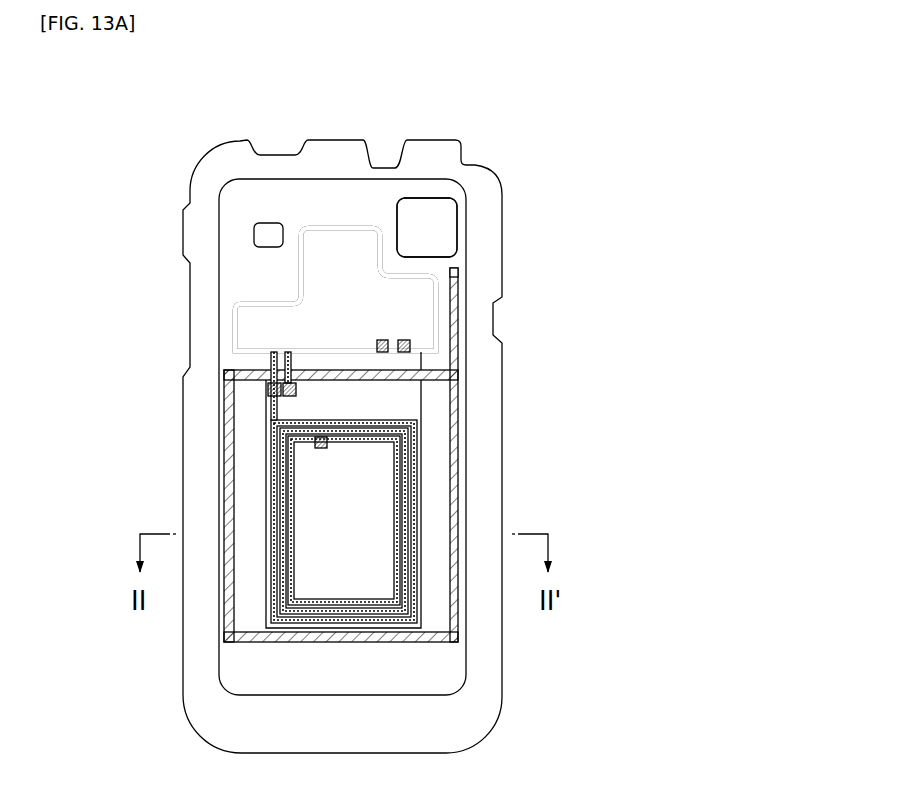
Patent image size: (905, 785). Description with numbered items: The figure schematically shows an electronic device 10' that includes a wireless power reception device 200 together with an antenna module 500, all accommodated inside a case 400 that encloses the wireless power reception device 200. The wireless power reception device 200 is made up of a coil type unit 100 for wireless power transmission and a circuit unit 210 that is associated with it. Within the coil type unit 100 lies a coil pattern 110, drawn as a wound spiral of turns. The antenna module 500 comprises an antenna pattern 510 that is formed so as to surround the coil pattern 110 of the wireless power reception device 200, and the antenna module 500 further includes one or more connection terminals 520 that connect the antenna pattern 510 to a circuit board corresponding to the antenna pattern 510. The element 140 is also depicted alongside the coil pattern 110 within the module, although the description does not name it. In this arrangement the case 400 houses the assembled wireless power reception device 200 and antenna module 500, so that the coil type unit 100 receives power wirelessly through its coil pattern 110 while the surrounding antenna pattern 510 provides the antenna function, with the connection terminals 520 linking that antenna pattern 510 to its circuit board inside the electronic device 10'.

The electronic device 10' is at (305, 426).
The coil type unit 100 is at (424, 490).
The coil pattern 110 is at (413, 496).
The magnetic shielding sheet 140 is at (408, 393).
The wireless power reception device 200 is at (441, 265).
The circuit unit 210 is at (402, 312).
The case 400 is at (470, 173).
The antenna module 500 is at (412, 514).
The antenna pattern 510 is at (437, 643).
The connection terminal 520 is at (459, 270).